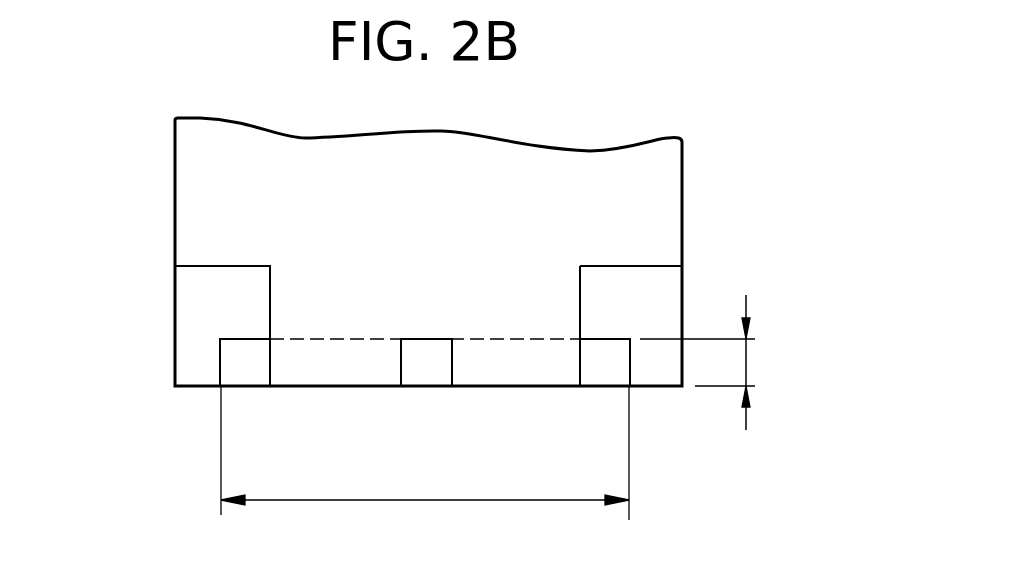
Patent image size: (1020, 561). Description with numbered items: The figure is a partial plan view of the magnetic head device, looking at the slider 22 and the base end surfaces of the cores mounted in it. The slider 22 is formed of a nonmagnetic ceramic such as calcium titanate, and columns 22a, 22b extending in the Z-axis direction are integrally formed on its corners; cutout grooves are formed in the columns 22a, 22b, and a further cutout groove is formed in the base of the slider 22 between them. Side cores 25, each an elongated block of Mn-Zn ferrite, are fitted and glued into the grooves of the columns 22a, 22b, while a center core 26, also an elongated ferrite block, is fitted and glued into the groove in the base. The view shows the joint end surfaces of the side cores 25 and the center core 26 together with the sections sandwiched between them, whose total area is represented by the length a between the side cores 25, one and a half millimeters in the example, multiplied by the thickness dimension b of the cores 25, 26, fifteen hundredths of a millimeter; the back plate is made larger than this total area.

The slider 22 is at (684, 205).
The column 22a is at (665, 300).
The column 22b is at (185, 302).
The side core 25 is at (250, 372).
The center core 26 is at (425, 372).
The length between side cores a is at (425, 458).
The thickness dimension of cores b is at (705, 362).